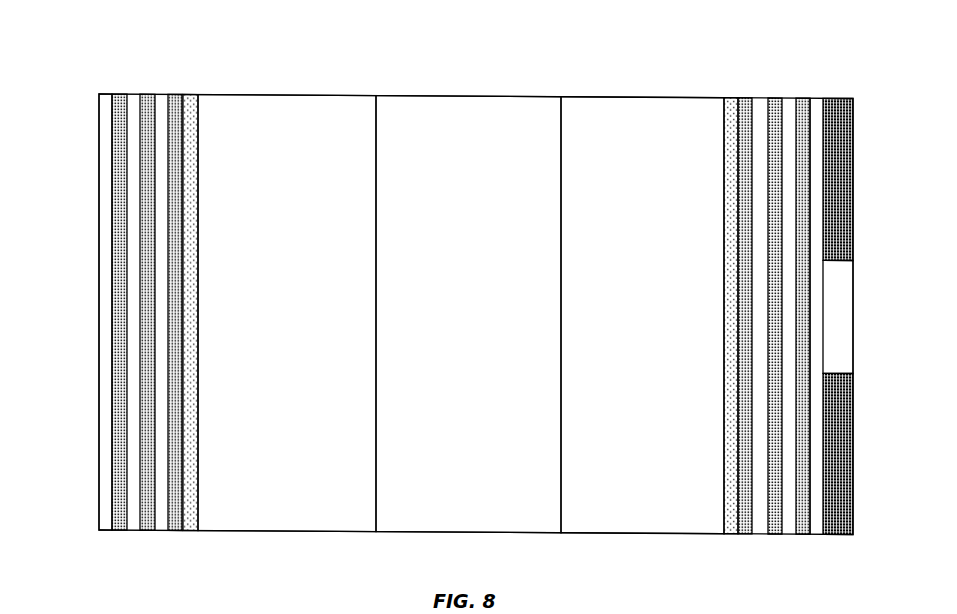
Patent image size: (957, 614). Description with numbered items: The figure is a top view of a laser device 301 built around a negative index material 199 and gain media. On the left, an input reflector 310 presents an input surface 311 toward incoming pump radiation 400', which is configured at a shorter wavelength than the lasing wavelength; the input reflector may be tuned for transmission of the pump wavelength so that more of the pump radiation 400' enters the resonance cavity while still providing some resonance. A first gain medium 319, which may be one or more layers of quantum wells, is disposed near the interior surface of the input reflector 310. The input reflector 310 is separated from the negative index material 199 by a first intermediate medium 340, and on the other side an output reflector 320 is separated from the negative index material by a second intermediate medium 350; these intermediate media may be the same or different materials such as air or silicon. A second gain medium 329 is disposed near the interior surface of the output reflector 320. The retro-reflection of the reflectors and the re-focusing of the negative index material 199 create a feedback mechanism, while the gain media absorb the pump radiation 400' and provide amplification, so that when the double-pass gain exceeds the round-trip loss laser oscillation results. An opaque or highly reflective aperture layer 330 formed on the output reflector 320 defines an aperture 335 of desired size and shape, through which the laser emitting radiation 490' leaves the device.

The laser device 301 is at (78, 62).
The input reflector 310 is at (98, 87).
The input surface 311 is at (98, 472).
The first gain medium 319 is at (189, 531).
The first intermediate medium 340 is at (283, 95).
The negative index material 199 is at (479, 96).
The second intermediate medium 350 is at (665, 97).
The output reflector 320 is at (738, 92).
The second gain medium 329 is at (732, 533).
The aperture layer 330 is at (843, 97).
The aperture 335 is at (838, 289).
The pump radiation 400' is at (49, 277).
The laser emitting radiation 490' is at (881, 342).